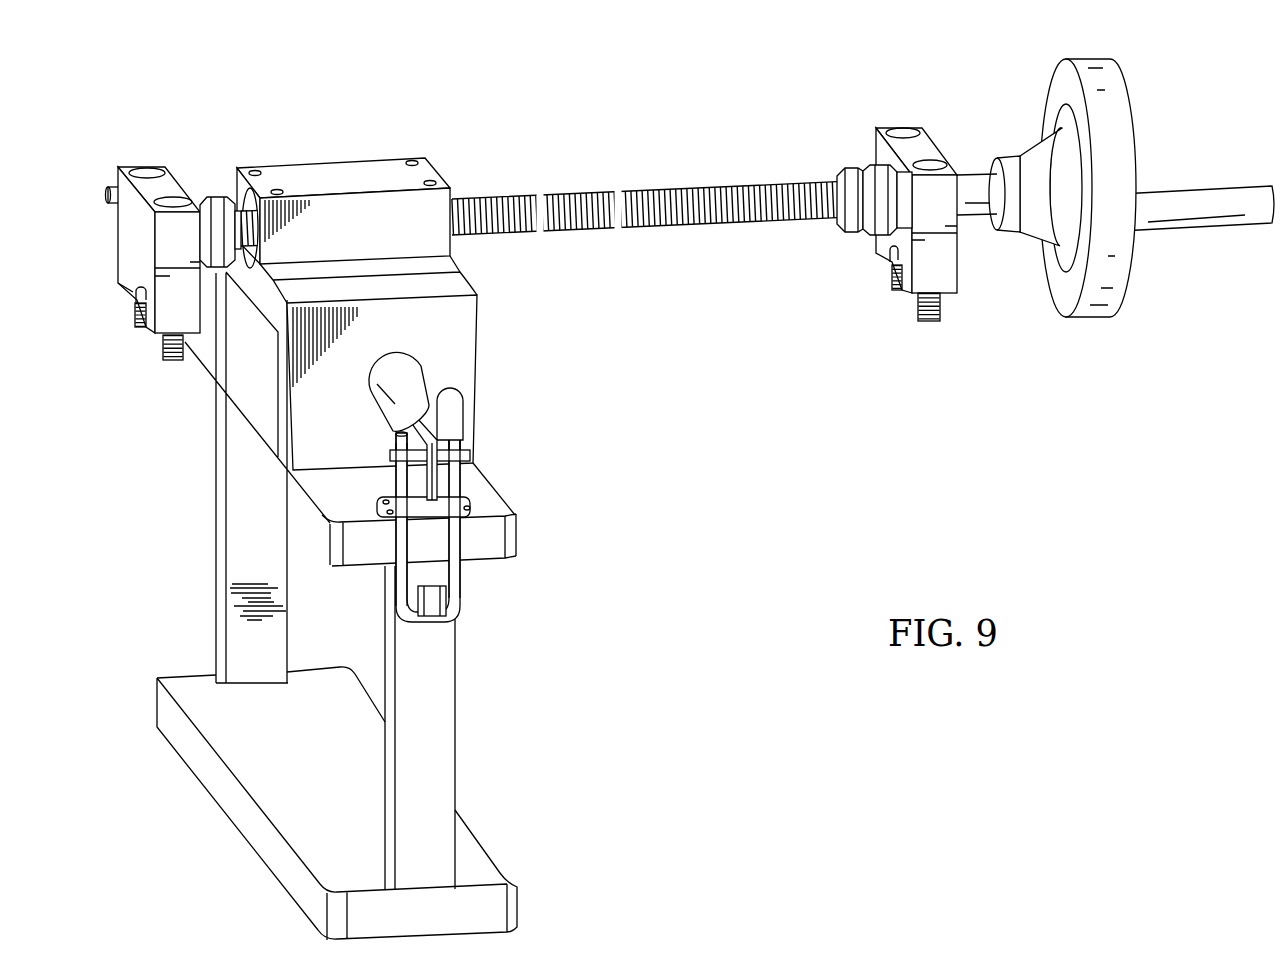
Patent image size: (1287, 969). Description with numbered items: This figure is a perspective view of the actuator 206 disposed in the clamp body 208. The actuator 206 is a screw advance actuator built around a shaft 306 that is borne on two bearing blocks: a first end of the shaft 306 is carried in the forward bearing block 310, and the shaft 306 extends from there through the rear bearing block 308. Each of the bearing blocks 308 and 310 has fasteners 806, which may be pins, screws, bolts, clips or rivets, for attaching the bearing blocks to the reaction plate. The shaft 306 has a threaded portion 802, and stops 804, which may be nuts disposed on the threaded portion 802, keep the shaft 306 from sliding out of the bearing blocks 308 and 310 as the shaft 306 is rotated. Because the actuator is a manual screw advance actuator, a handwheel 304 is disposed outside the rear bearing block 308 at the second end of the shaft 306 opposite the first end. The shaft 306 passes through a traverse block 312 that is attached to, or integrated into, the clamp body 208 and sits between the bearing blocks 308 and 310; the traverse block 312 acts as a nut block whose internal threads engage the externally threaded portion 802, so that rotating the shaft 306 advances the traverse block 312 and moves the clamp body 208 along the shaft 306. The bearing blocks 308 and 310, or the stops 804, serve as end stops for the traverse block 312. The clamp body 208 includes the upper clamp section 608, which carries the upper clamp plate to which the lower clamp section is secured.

The actuator 206 is at (1258, 39).
The clamp body 208 is at (430, 158).
The handwheel 304 is at (1274, 321).
The shaft 306 is at (976, 168).
The rear bearing block 308 is at (904, 132).
The forward bearing block 310 is at (118, 237).
The traverse block 312 is at (336, 166).
The upper clamp section 608 is at (538, 150).
The threaded portion 802 is at (729, 226).
The stops 804 is at (223, 196).
The fasteners 806 is at (176, 361).